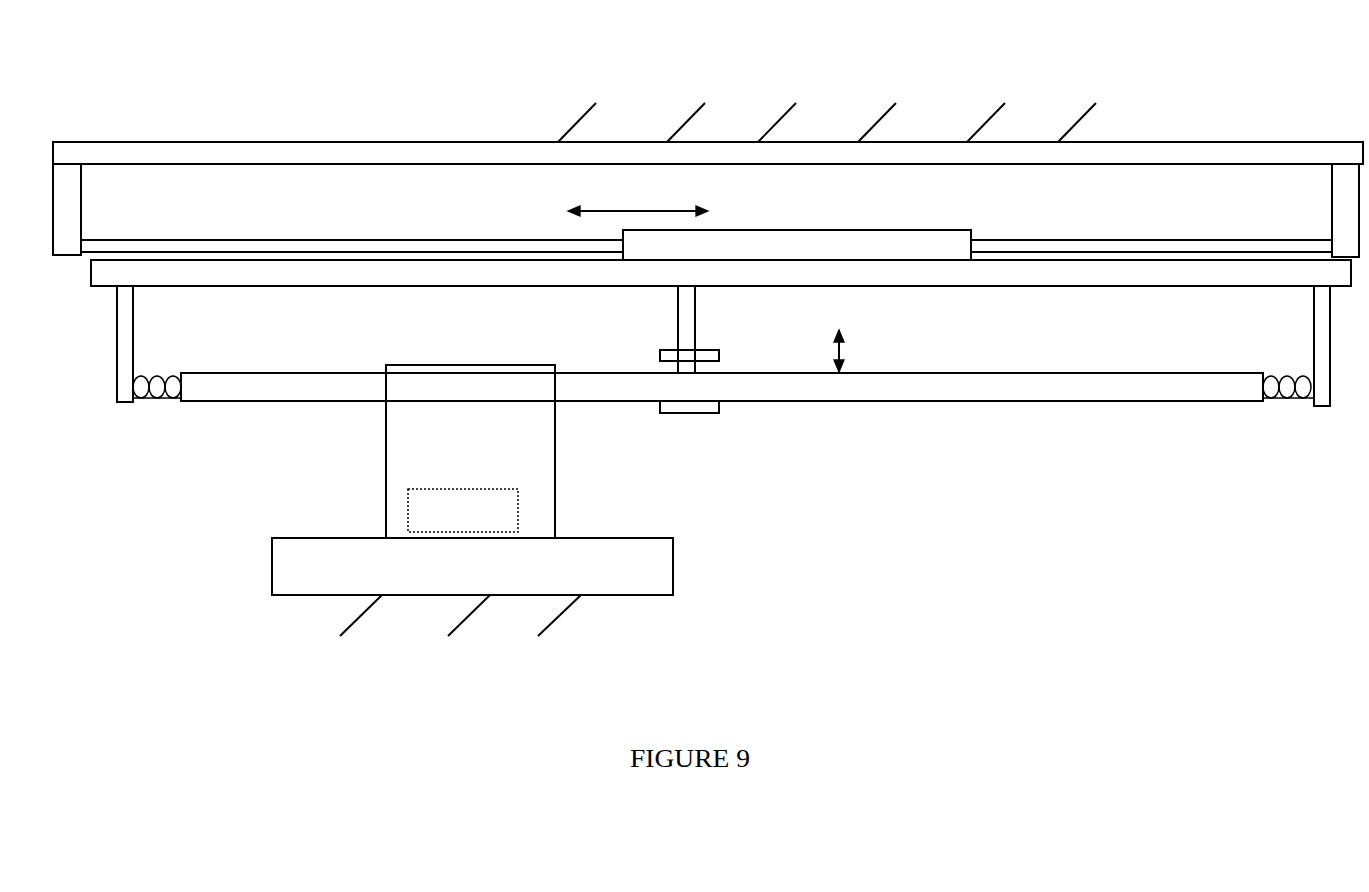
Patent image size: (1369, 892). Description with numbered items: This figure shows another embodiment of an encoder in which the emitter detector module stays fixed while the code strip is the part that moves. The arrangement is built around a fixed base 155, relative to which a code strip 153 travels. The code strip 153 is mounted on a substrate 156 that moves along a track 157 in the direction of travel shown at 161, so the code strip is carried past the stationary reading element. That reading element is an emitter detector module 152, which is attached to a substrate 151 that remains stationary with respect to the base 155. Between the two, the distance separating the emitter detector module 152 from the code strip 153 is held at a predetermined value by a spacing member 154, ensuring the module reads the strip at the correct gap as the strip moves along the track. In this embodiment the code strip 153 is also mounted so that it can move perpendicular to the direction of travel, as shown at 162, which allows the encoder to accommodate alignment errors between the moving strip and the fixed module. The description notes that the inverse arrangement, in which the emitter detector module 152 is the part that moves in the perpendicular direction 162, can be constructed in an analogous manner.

The substrate 151 is at (655, 578).
The emitter detector module 152 is at (507, 505).
The code strip 153 is at (1245, 403).
The spacing member 154 is at (386, 462).
The fixed base 155 is at (1203, 148).
The substrate 156 is at (882, 240).
The track 157 is at (1058, 243).
The direction of travel 161 is at (630, 208).
The perpendicular direction 162 is at (842, 352).